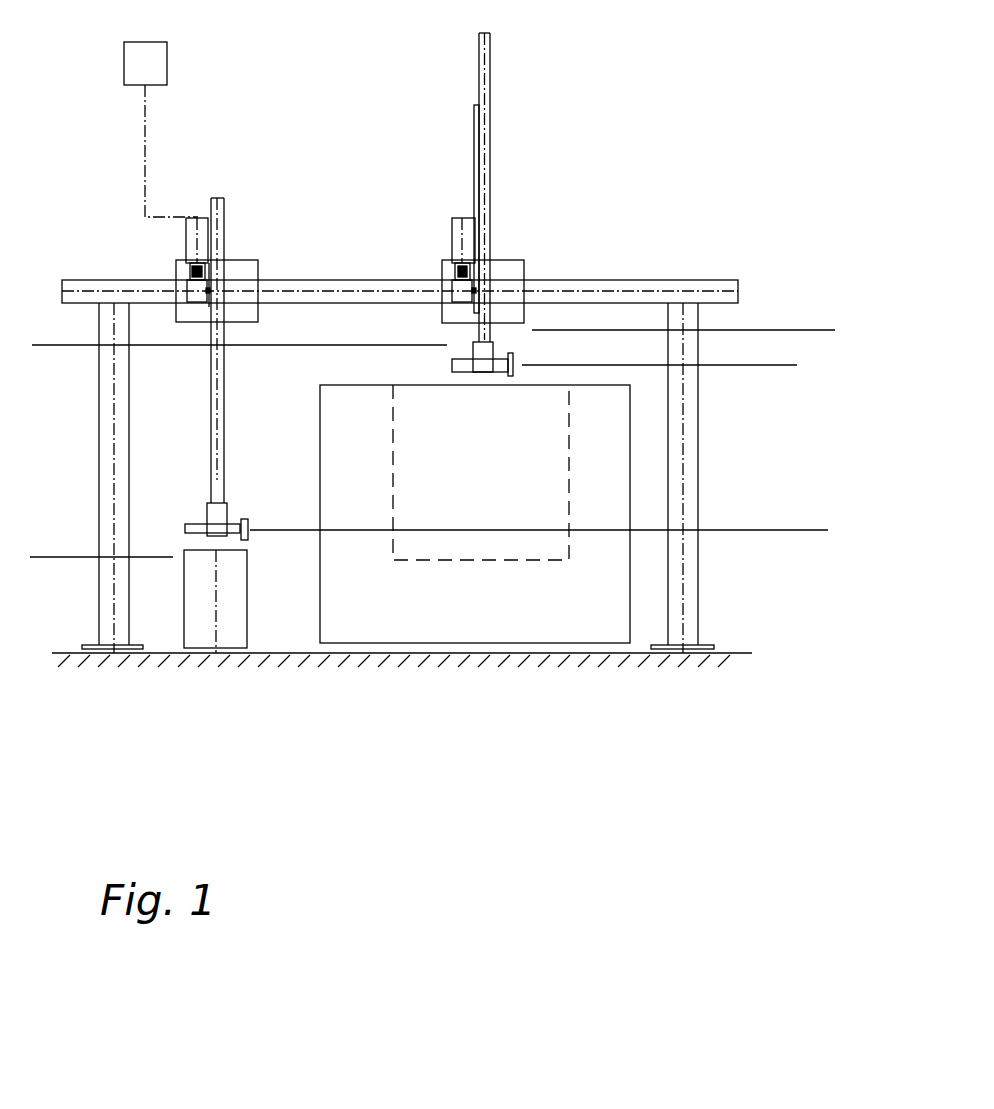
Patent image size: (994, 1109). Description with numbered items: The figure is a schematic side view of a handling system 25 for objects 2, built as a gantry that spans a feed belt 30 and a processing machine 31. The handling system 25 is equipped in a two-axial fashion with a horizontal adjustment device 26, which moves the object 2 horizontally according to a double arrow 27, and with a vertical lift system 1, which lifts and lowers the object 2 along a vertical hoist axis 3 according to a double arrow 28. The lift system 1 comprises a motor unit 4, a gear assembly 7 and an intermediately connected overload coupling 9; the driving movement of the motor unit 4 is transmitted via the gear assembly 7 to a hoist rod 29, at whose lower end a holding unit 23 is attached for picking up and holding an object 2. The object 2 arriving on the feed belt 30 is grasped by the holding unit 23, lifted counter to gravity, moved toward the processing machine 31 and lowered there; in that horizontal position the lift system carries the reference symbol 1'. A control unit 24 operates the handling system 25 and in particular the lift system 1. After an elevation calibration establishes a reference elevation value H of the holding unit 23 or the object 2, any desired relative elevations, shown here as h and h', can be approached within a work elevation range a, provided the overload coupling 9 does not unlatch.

The vertical lift system 1 is at (280, 340).
The lift system in horizontal position 1' is at (515, 187).
The object 2 is at (232, 525).
The vertical hoist axis 3 is at (222, 210).
The motor unit 4 is at (190, 225).
The gear assembly 7 is at (196, 302).
The overload coupling 9 is at (192, 270).
The holding unit 23 is at (215, 517).
The control unit 24 is at (161, 129).
The handling system 25 is at (663, 184).
The horizontal adjustment device 26 is at (246, 259).
The double arrow 27 is at (400, 246).
The double arrow 28 is at (161, 352).
The hoist rod 29 is at (220, 417).
The feed belt 30 is at (234, 630).
The processing machine 31 is at (514, 630).
The work elevation range a is at (42, 557).
The reference elevation value H is at (770, 330).
The current elevation h is at (794, 431).
The current elevation h' is at (764, 367).